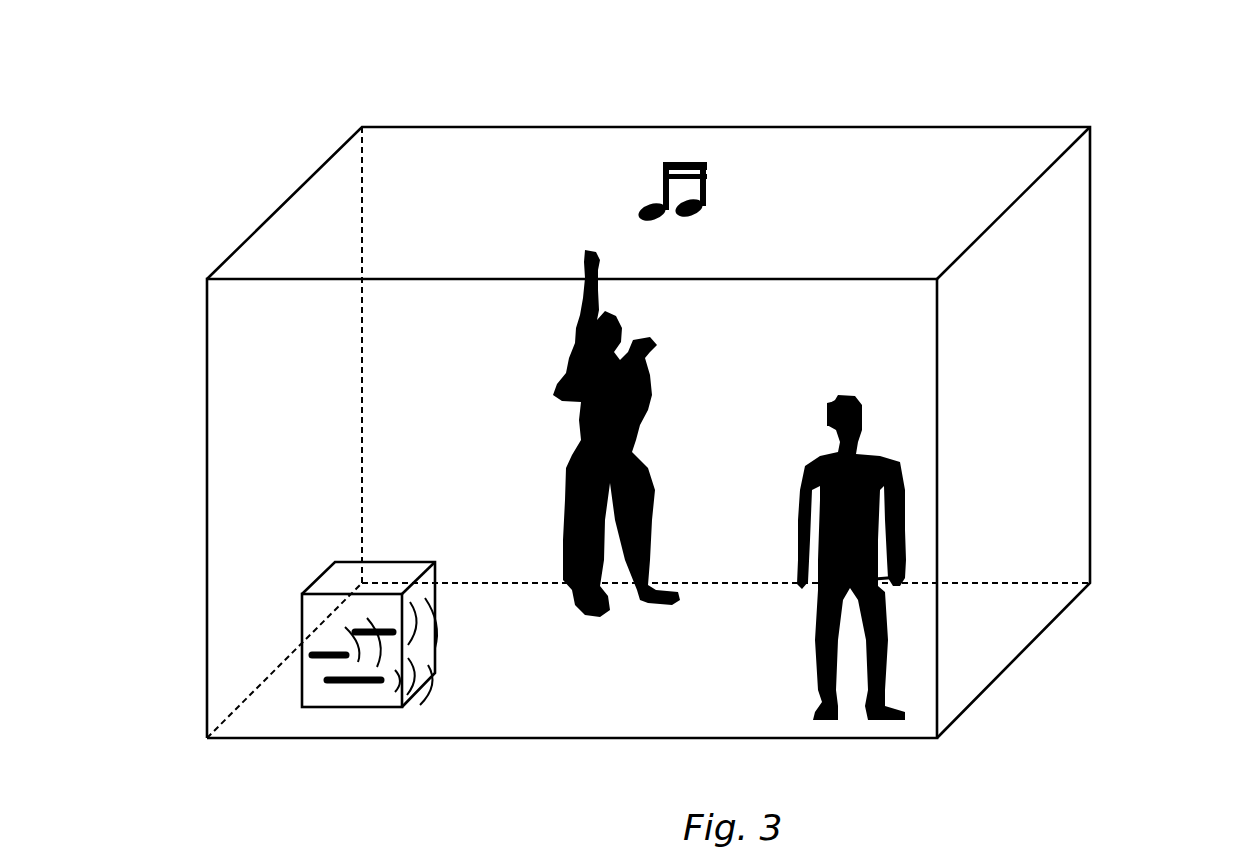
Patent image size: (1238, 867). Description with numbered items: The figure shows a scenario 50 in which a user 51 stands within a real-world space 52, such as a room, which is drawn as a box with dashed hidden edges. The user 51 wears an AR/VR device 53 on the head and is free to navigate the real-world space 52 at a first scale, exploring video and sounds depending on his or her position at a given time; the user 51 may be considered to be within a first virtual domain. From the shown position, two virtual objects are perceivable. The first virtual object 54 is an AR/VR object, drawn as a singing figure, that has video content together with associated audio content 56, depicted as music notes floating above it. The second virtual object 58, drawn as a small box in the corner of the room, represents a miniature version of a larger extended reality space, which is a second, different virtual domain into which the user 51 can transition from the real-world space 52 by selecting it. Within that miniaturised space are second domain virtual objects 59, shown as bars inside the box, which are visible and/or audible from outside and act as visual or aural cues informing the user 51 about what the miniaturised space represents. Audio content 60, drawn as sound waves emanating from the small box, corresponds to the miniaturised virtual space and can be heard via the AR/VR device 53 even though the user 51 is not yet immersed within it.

The scenario 50 is at (1152, 128).
The user 51 is at (905, 518).
The real-world space 52 is at (980, 127).
The AR/VR device 53 is at (847, 392).
The first virtual object 54 is at (583, 250).
The audio content 56 is at (687, 160).
The second virtual object 58 is at (380, 707).
The second domain virtual objects 59 is at (332, 682).
The audio content 60 is at (423, 622).